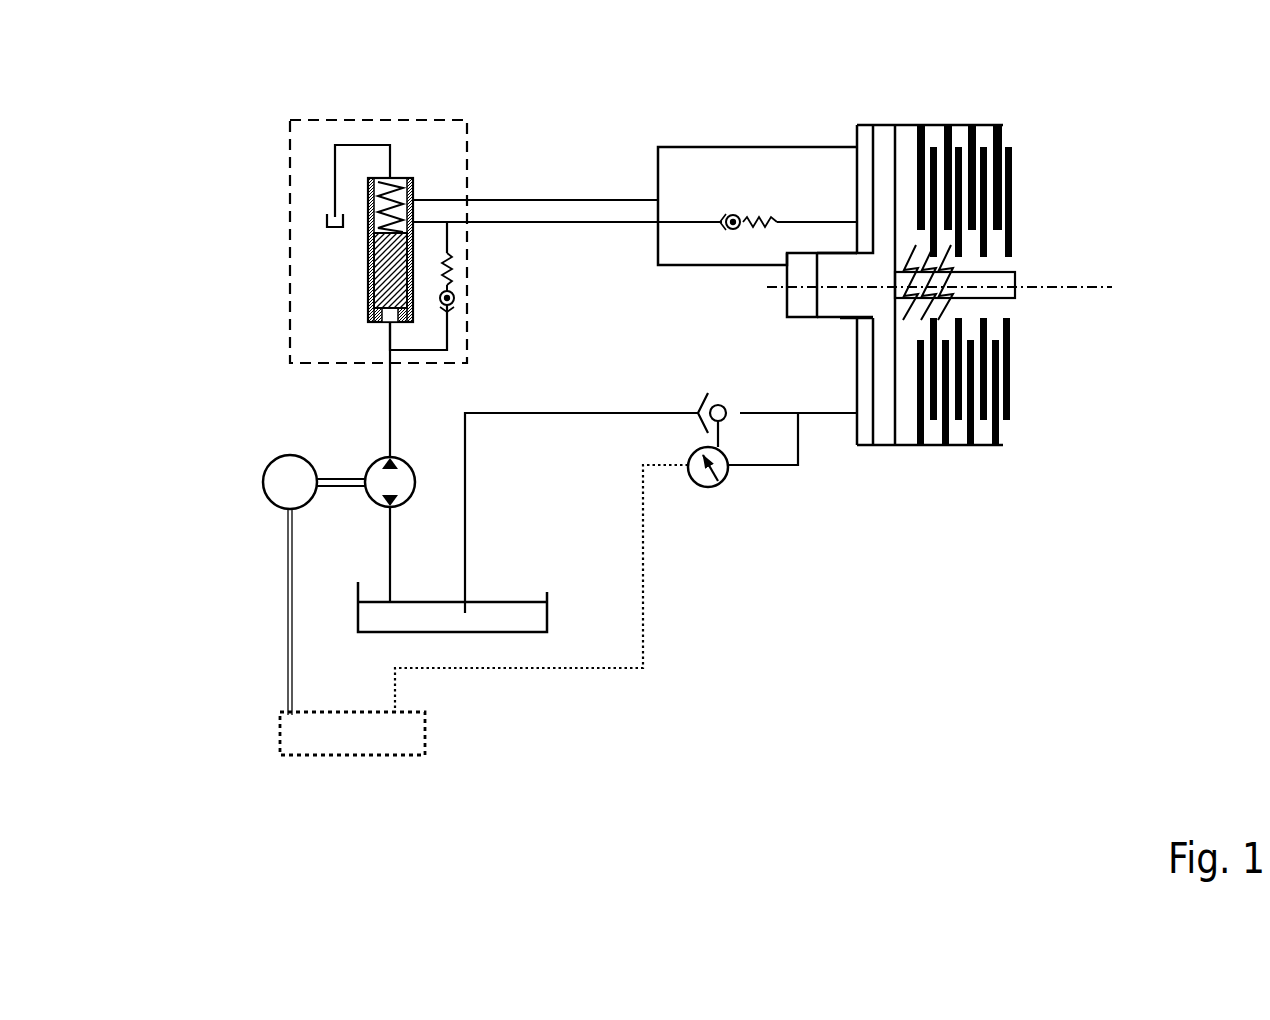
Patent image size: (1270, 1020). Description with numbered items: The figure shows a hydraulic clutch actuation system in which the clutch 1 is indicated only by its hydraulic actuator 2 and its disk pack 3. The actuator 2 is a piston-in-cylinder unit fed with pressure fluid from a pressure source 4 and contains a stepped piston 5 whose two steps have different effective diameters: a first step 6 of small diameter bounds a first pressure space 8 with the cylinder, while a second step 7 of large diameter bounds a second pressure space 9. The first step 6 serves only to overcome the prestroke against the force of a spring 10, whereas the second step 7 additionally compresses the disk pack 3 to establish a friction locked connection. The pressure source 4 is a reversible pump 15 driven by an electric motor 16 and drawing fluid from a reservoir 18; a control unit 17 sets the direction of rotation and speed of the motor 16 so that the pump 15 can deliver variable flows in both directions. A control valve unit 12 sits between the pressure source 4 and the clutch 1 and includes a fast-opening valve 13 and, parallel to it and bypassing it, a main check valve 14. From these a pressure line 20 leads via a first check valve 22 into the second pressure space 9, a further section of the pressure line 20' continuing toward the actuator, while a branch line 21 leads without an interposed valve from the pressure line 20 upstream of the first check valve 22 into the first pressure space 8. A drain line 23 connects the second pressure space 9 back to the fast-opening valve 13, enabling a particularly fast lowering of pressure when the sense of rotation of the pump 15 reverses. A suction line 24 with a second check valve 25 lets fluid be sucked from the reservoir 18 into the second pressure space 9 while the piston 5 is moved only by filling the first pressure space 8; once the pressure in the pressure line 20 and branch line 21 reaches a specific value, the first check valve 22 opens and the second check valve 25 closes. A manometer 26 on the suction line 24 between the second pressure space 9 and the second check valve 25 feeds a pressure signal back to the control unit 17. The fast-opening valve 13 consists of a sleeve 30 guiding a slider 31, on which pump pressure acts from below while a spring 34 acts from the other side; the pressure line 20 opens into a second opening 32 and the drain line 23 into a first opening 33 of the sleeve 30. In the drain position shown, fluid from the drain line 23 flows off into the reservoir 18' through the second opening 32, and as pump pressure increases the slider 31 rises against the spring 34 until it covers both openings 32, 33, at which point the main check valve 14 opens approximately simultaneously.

The clutch 1 is at (978, 110).
The hydraulic actuator 2 is at (884, 110).
The disk pack 3 is at (1012, 355).
The pressure source 4 is at (270, 436).
The stepped piston 5 is at (886, 317).
The first step 6 is at (832, 300).
The second step 7 is at (888, 432).
The first pressure space 8 is at (794, 273).
The second pressure space 9 is at (863, 184).
The spring 10 is at (948, 252).
The control valve unit 12 is at (290, 118).
The fast-opening valve 13 is at (420, 162).
The main check valve 14 is at (452, 277).
The reversible pump 15 is at (380, 462).
The electric motor 16 is at (277, 482).
The control unit 17 is at (298, 732).
The reservoir 18 is at (337, 581).
The reservoir 18' is at (235, 175).
The pressure line 20 is at (567, 122).
The pressure line section 20' is at (817, 122).
The branch line 21 is at (746, 254).
The first check valve 22 is at (732, 218).
The drain line 23 is at (655, 175).
The suction line 24 is at (521, 415).
The second check valve 25 is at (721, 483).
The manometer 26 is at (699, 473).
The sleeve 30 is at (372, 293).
The slider 31 is at (387, 278).
The second opening 32 is at (372, 200).
The first opening 33 is at (405, 187).
The spring 34 is at (380, 178).